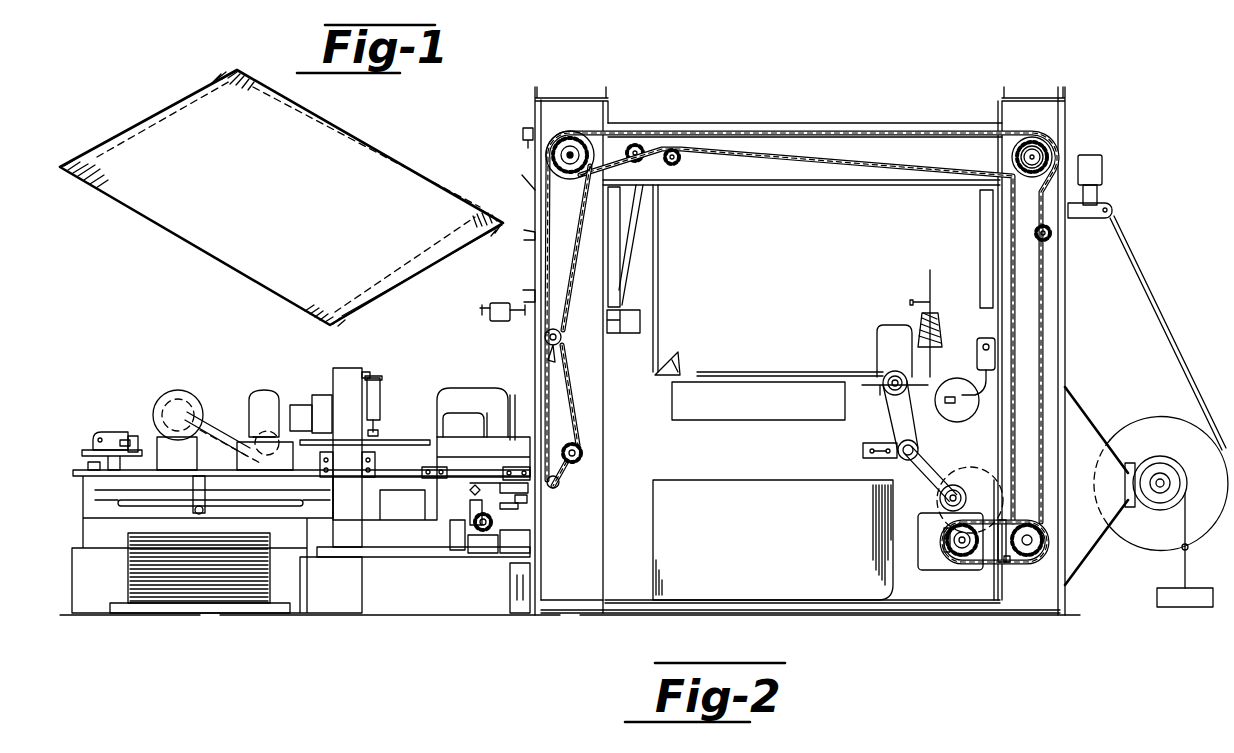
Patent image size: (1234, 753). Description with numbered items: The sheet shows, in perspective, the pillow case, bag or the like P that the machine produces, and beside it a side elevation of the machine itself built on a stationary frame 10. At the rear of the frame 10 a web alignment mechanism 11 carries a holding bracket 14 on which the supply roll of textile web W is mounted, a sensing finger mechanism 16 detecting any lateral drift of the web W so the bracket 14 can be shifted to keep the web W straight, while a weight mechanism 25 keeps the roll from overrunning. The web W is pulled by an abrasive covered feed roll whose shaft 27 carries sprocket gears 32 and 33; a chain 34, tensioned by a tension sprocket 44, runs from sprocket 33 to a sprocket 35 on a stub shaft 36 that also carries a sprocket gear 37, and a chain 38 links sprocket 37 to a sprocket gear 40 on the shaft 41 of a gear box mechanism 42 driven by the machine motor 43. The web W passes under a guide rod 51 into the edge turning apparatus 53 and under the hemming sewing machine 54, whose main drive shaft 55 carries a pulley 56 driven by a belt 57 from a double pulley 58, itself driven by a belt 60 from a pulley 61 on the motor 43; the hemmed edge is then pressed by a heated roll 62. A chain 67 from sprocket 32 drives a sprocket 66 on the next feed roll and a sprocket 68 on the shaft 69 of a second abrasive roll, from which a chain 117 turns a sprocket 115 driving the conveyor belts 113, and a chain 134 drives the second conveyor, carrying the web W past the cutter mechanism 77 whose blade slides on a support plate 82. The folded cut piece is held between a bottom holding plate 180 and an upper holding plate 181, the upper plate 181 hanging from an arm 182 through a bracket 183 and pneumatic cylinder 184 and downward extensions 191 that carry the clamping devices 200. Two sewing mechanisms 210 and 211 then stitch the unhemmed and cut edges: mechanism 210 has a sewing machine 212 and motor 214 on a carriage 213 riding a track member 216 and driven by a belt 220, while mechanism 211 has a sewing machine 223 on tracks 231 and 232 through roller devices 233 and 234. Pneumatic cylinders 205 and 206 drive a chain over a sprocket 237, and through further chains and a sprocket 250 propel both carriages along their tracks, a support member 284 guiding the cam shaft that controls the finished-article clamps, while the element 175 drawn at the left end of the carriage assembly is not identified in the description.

In FIG. 1, the pillow case, bag or the like P is at (275, 197).
In FIG. 2, the pillow case, bag or the like P is at (190, 600).
In FIG. 2, the continuous web of textile material W is at (659, 267).
In FIG. 2, the stationary frame 10 is at (578, 598).
In FIG. 2, the web alignment mechanism 11 is at (1090, 395).
In FIG. 2, the holding bracket 14 is at (1092, 452).
In FIG. 2, the sensing finger mechanism 16 is at (1105, 172).
In FIG. 2, the weight mechanism 25 is at (1172, 592).
In FIG. 2, the shaft of abrasive covered feed roll 27 is at (1050, 150).
In FIG. 2, the sprocket gear 32 is at (1010, 157).
In FIG. 2, the sprocket gear 33 is at (1044, 162).
In FIG. 2, the chain 34 is at (1044, 285).
In FIG. 2, the sprocket 35 is at (1042, 540).
In FIG. 2, the stub shaft 36 is at (1032, 536).
In FIG. 2, the sprocket gear 37 is at (1012, 562).
In FIG. 2, the chain 38 is at (1003, 565).
In FIG. 2, the sprocket gear 40 is at (962, 560).
In FIG. 2, the shaft 41 is at (946, 550).
In FIG. 2, the gear box mechanism 42 is at (918, 565).
In FIG. 2, the machine motor 43 is at (992, 496).
In FIG. 2, the tension sprocket 44 is at (1050, 238).
In FIG. 2, the guide rod 51 is at (660, 378).
In FIG. 2, the edge turning apparatus 53 is at (740, 372).
In FIG. 2, the sewing machine 54 is at (885, 332).
In FIG. 2, the main drive shaft 55 is at (882, 368).
In FIG. 2, the pulley 56 is at (880, 388).
In FIG. 2, the belt 57 is at (890, 437).
In FIG. 2, the double pulley 58 is at (920, 450).
In FIG. 2, the belt 60 is at (936, 470).
In FIG. 2, the pulley 61 is at (940, 498).
In FIG. 2, the heated roll 62 is at (963, 365).
In FIG. 2, the sprocket 66 is at (655, 128).
In FIG. 2, the chain 67 is at (720, 157).
In FIG. 2, the sprocket 68 is at (588, 138).
In FIG. 2, the shaft 69 is at (560, 148).
In FIG. 2, the cutter mechanism 77 is at (620, 312).
In FIG. 2, the support plate 82 is at (503, 305).
In FIG. 2, the belts 113 is at (580, 492).
In FIG. 2, the sprocket 115 is at (562, 340).
In FIG. 2, the chain 117 is at (546, 200).
In FIG. 2, the chain 134 is at (560, 345).
In FIG. 2, the clamp unit 175 is at (100, 428).
In FIG. 2, the bottom holding plate 180 is at (392, 433).
In FIG. 2, the upper holding plate 181 is at (116, 438).
In FIG. 2, the arm 182 is at (130, 438).
In FIG. 2, the bracket 183 is at (370, 376).
In FIG. 2, the pneumatic cylinder 184 is at (381, 392).
In FIG. 2, the extensions 191 is at (320, 400).
In FIG. 2, the clamping devices 200 is at (298, 410).
In FIG. 2, the pneumatic cylinder 205 is at (522, 545).
In FIG. 2, the pneumatic cylinder 206 is at (475, 550).
In FIG. 2, the sewing mechanism 210 is at (263, 388).
In FIG. 2, the sewing mechanism 211 is at (470, 385).
In FIG. 2, the sewing machine 212 is at (255, 402).
In FIG. 2, the carriage 213 is at (200, 476).
In FIG. 2, the motor 214 is at (178, 392).
In FIG. 2, the track member 216 is at (88, 505).
In FIG. 2, the belt 220 is at (232, 436).
In FIG. 2, the sewing machine 223 is at (485, 396).
In FIG. 2, the track 231 is at (525, 503).
In FIG. 2, the track 232 is at (450, 500).
In FIG. 2, the roller device 233 is at (530, 494).
In FIG. 2, the roller device 234 is at (455, 488).
In FIG. 2, the sprocket 237 is at (490, 532).
In FIG. 2, the sprocket 250 is at (465, 485).
In FIG. 2, the support member 284 is at (88, 460).